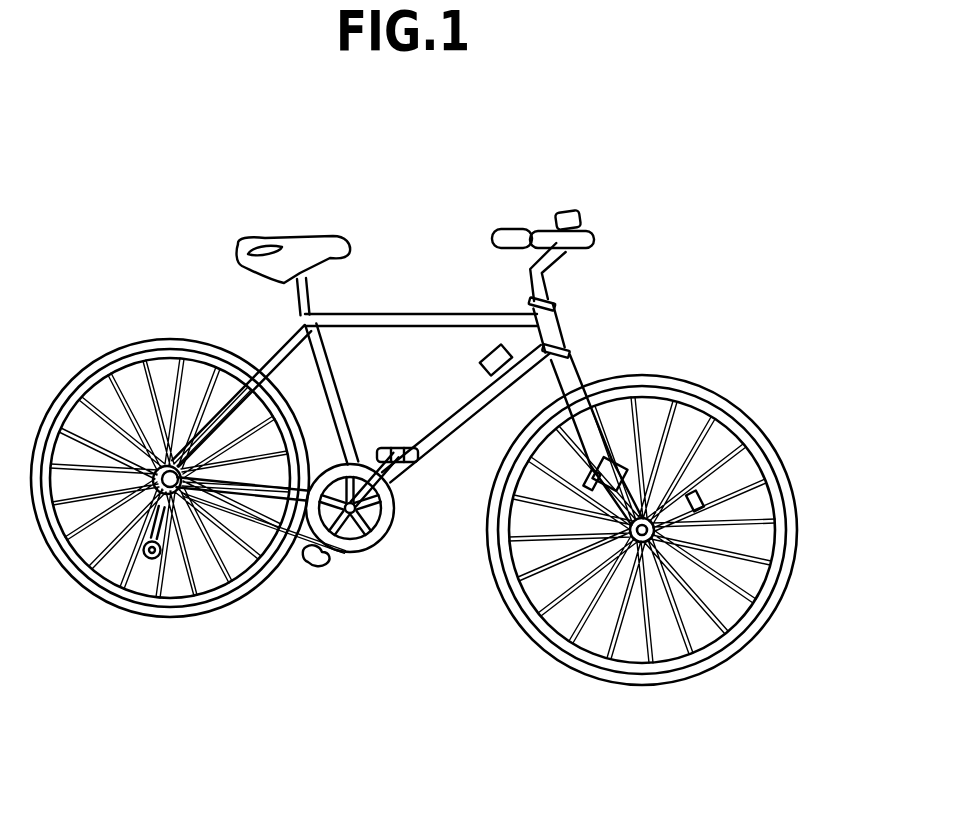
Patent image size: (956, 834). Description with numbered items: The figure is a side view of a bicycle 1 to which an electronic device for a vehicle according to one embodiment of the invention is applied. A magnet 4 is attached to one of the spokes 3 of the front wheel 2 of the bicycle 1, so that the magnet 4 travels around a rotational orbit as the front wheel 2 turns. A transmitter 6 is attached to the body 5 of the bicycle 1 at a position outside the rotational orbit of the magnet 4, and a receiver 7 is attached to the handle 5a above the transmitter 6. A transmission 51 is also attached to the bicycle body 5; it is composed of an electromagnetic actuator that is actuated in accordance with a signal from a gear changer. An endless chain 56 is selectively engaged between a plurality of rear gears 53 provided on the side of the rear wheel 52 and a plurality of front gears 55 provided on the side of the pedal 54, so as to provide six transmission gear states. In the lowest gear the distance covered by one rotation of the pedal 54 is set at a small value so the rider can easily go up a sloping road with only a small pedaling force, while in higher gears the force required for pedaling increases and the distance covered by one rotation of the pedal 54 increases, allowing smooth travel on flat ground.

The bicycle 1 is at (387, 275).
The front wheel 2 is at (687, 672).
The spokes 3 is at (770, 505).
The magnet 4 is at (703, 492).
The body 5 is at (560, 330).
The handle 5a is at (595, 238).
The transmitter 6 is at (594, 497).
The receiver 7 is at (575, 210).
The transmission 51 is at (494, 342).
The rear wheel 52 is at (226, 589).
The rear gears 53 is at (136, 560).
The pedal 54 is at (393, 447).
The front gears 55 is at (386, 532).
The endless chain 56 is at (291, 553).